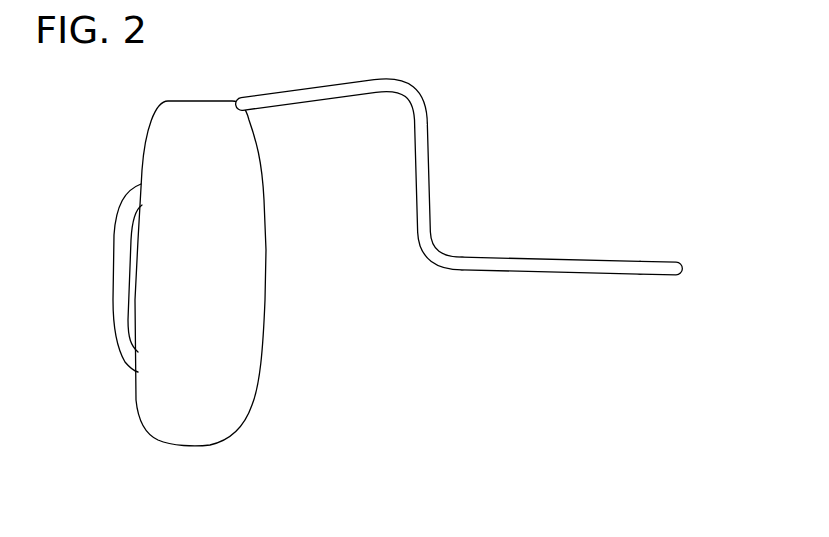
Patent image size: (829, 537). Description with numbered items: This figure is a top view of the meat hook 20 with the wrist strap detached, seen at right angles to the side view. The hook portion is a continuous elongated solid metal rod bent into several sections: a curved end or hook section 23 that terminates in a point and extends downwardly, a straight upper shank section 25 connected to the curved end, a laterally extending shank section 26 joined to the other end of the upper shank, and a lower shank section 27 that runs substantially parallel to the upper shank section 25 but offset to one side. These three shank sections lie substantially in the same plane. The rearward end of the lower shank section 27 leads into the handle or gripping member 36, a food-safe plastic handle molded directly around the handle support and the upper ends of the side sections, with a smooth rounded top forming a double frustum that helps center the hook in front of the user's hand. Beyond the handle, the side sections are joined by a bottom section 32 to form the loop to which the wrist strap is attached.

The meat hook 20 is at (377, 232).
The curved end or hook section 23 is at (683, 268).
The upper shank section 25 is at (545, 276).
The laterally extending shank section 26 is at (427, 147).
The lower shank section 27 is at (318, 84).
The bottom section 32 is at (120, 268).
The handle or gripping member 36 is at (267, 258).